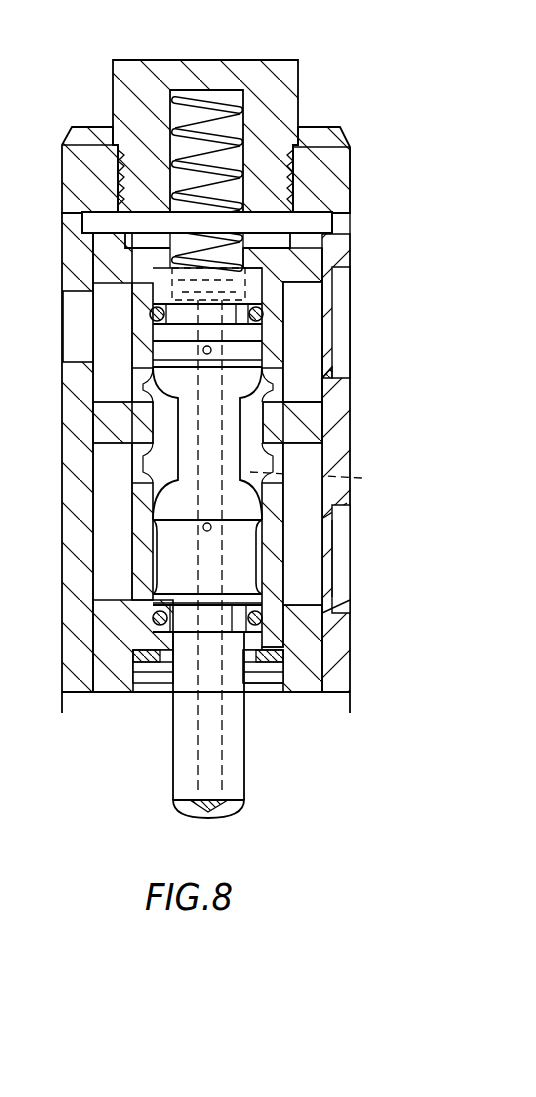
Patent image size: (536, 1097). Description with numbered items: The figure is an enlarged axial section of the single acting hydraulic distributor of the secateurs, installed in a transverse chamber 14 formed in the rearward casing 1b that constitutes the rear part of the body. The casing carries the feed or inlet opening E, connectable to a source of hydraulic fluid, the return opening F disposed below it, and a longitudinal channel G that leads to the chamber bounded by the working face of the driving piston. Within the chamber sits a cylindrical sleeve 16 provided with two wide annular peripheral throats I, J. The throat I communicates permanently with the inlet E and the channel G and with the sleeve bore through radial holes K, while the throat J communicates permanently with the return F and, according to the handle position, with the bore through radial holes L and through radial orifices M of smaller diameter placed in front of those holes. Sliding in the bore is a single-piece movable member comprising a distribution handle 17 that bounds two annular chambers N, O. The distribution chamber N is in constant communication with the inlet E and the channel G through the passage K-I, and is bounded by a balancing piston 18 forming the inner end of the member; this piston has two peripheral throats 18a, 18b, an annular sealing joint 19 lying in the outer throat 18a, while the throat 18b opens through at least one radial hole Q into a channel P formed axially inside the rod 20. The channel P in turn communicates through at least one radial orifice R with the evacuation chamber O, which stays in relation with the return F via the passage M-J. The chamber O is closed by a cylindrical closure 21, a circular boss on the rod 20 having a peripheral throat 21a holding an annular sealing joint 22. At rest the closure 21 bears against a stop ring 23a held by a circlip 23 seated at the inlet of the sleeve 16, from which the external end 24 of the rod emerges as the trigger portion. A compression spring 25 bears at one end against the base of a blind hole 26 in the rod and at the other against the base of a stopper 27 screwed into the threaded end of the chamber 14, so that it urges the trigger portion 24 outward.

The stopper 27 is at (262, 83).
The compression spring 25 is at (245, 118).
The rearward casing 1b is at (85, 160).
The transverse chamber 14 is at (90, 245).
The peripheral throat 18a is at (152, 312).
The balancing piston 18 is at (135, 380).
The peripheral throat 18b is at (283, 335).
The blind hole 26 is at (265, 276).
The annular sealing joint 19 is at (152, 340).
The cylindrical sleeve 16 is at (345, 278).
The longitudinal channel G is at (80, 327).
The radial hole Q is at (200, 348).
The feed or inlet opening E is at (337, 333).
The annular peripheral throat I is at (302, 353).
The radial holes K is at (270, 390).
The rod 20 is at (125, 418).
The distribution chamber N is at (247, 436).
The distribution handle 17 is at (170, 497).
The channel P is at (314, 479).
The annular peripheral throat J is at (110, 511).
The radial holes L is at (347, 503).
The radial orifice R is at (203, 530).
The radial orifices M is at (263, 530).
The return opening F is at (333, 567).
The evacuation chamber O is at (290, 590).
The annular sealing joint 22 is at (155, 615).
The peripheral throat 21a is at (172, 640).
The stop ring 23a is at (267, 657).
The circlip 23 is at (285, 660).
The cylindrical closure 21 is at (200, 690).
The external end 24 is at (228, 777).